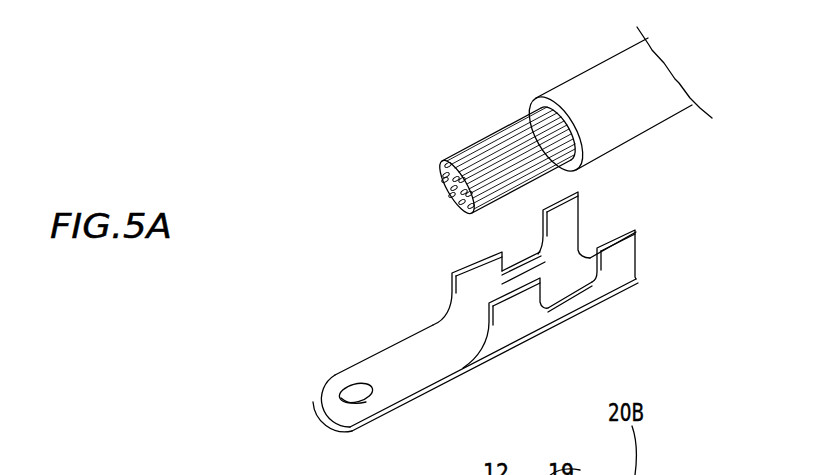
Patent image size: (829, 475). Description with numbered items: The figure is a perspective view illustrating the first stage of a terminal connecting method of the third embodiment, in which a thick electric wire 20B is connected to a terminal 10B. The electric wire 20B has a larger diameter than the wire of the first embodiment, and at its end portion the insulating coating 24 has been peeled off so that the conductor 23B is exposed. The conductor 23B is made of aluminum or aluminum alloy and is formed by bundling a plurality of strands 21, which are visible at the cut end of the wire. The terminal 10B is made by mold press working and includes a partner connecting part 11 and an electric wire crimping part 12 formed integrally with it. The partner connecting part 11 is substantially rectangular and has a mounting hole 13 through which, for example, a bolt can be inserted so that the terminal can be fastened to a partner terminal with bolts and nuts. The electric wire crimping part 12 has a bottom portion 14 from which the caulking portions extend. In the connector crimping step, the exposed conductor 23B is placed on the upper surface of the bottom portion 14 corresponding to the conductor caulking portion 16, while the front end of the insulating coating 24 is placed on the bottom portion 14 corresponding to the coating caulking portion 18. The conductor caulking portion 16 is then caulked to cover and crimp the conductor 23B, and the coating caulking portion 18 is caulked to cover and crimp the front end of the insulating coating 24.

The electric wire 20B is at (555, 125).
The conductor 23B is at (474, 149).
The strands 21 is at (442, 180).
The insulating coating 24 is at (630, 112).
The terminal 10B is at (508, 333).
The partner connecting part 11 is at (475, 377).
The mounting hole 13 is at (368, 411).
The electric wire crimping part 12 is at (547, 286).
The bottom portion 14 is at (447, 321).
The conductor caulking portion 16 is at (492, 273).
The coating caulking portion 18 is at (567, 213).